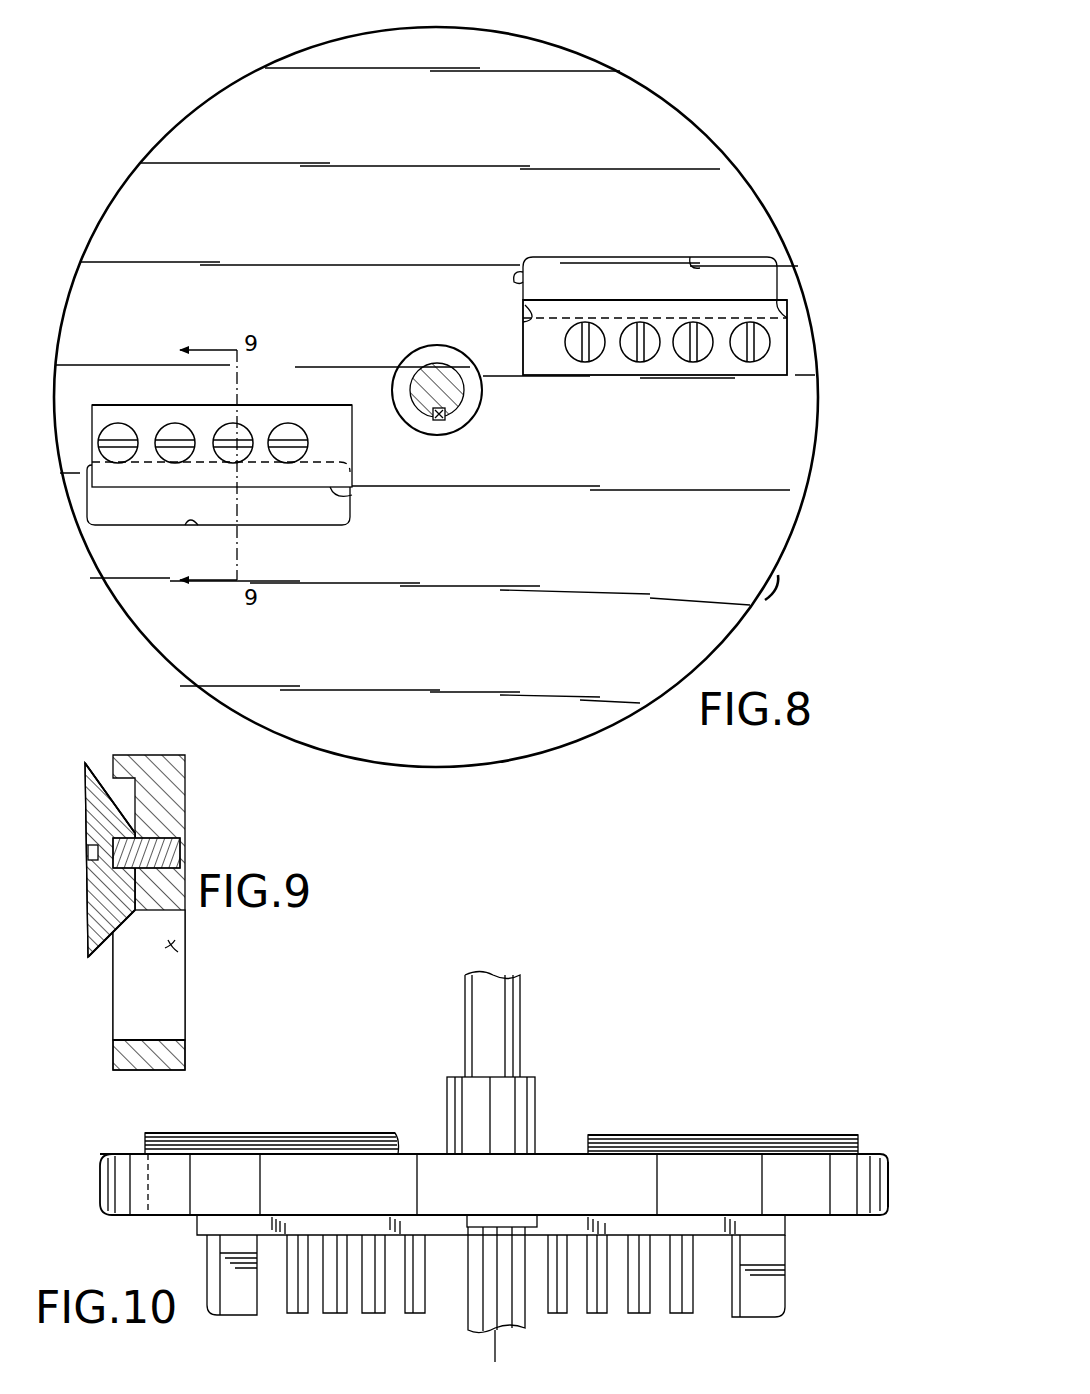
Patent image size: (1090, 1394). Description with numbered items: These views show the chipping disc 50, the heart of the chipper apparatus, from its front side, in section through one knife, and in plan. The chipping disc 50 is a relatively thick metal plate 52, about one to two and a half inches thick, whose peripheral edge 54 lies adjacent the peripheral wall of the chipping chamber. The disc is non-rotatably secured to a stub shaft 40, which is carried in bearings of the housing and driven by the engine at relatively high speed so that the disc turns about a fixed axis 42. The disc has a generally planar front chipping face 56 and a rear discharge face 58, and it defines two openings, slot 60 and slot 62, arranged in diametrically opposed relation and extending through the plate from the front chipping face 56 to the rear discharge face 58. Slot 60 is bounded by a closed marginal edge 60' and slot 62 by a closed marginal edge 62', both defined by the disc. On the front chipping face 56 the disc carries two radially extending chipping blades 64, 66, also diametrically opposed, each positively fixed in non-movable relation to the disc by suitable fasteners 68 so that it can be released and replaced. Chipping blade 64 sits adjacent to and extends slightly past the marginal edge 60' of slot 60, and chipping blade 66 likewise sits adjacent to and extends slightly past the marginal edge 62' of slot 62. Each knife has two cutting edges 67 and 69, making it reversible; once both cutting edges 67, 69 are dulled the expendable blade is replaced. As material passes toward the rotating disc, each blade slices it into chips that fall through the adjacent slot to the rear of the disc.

In FIG. 8, the stub shaft 40 is at (440, 398).
In FIG. 10, the stub shaft 40 is at (508, 1003).
In FIG. 10, the fixed axis 42 is at (497, 1342).
In FIG. 8, the chipping disc 50 is at (790, 194).
In FIG. 9, the chipping disc 50 is at (234, 1019).
In FIG. 10, the chipping disc 50 is at (879, 1126).
In FIG. 8, the metal plate 52 is at (568, 746).
In FIG. 9, the metal plate 52 is at (173, 797).
In FIG. 10, the metal plate 52 is at (823, 1208).
In FIG. 8, the peripheral edge 54 is at (772, 580).
In FIG. 10, the peripheral edge 54 is at (892, 1213).
In FIG. 8, the front chipping face 56 is at (435, 385).
In FIG. 9, the front chipping face 56 is at (105, 1037).
In FIG. 10, the front chipping face 56 is at (548, 1153).
In FIG. 9, the rear discharge face 58 is at (190, 828).
In FIG. 10, the rear discharge face 58 is at (453, 1217).
In FIG. 8, the slot 60 is at (218, 514).
In FIG. 9, the slot 60 is at (178, 975).
In FIG. 8, the closed marginal edge 60' is at (166, 539).
In FIG. 9, the closed marginal edge 60' is at (173, 1025).
In FIG. 8, the slot 62 is at (650, 260).
In FIG. 8, the closed marginal edge 62' is at (502, 278).
In FIG. 8, the chipping blade 64 is at (322, 420).
In FIG. 10, the chipping blade 64 is at (230, 1139).
In FIG. 8, the chipping blade 66 is at (690, 372).
In FIG. 10, the chipping blade 66 is at (777, 1147).
In FIG. 8, the cutting edge 67 is at (352, 495).
In FIG. 9, the cutting edge 67 is at (92, 966).
In FIG. 10, the cutting edge 67 is at (707, 1135).
In FIG. 8, the fasteners 68 is at (172, 433).
In FIG. 9, the fasteners 68 is at (100, 873).
In FIG. 8, the cutting edge 69 is at (150, 404).
In FIG. 9, the cutting edge 69 is at (88, 766).
In FIG. 10, the cutting edge 69 is at (318, 1141).